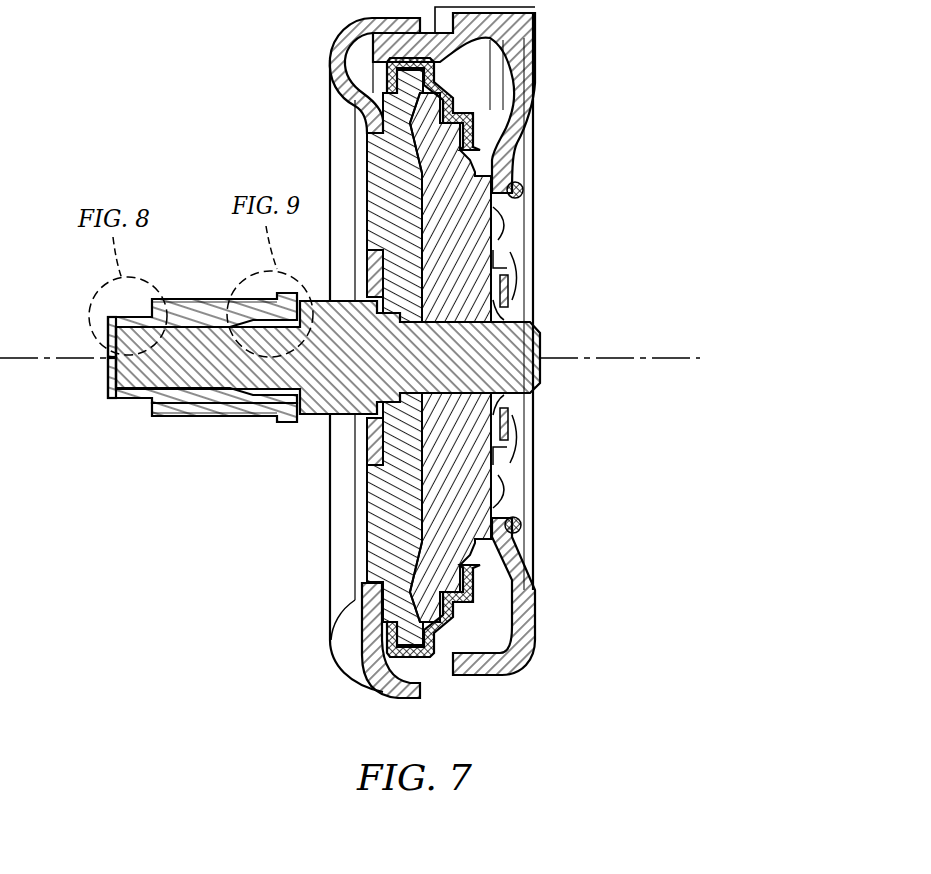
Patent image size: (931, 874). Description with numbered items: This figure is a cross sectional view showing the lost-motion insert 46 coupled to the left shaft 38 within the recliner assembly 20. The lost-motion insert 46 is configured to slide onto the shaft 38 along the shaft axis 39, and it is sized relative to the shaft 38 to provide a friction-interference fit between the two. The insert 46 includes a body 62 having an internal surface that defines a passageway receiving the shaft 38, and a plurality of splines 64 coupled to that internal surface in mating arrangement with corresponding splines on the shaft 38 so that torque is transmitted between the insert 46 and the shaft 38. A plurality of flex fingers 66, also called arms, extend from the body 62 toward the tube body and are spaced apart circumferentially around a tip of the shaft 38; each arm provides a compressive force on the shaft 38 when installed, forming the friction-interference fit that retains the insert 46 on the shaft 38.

The rotor assembly 20 is at (563, 190).
The left shaft 38 is at (138, 378).
The shaft axis 39 is at (618, 356).
The lost-motion insert 46 is at (197, 258).
The body 62 is at (212, 424).
The plurality of splines 64 is at (228, 393).
The plurality of flex fingers 66 is at (86, 378).